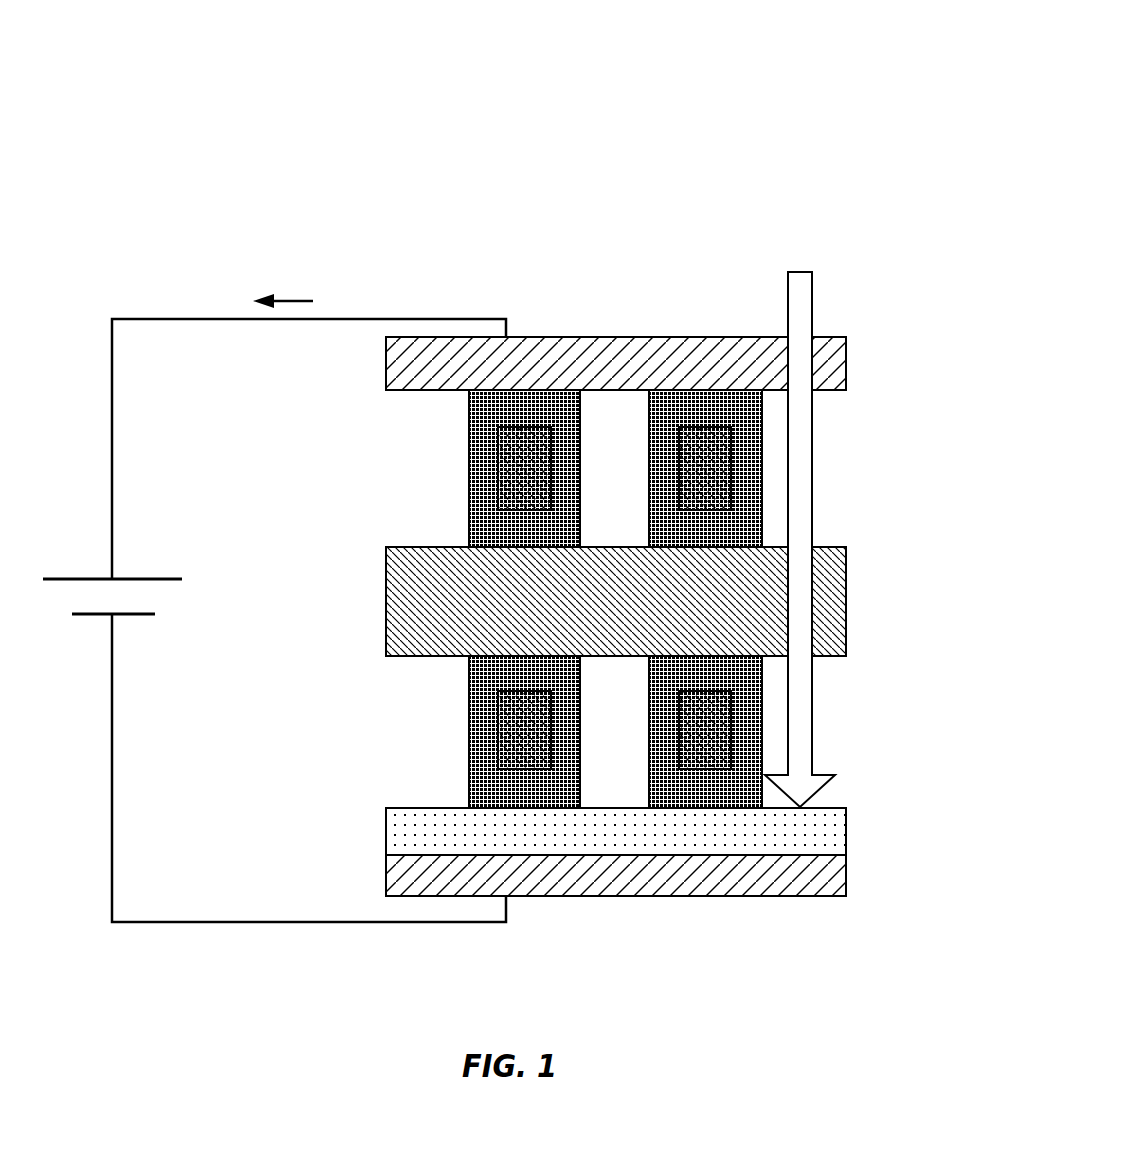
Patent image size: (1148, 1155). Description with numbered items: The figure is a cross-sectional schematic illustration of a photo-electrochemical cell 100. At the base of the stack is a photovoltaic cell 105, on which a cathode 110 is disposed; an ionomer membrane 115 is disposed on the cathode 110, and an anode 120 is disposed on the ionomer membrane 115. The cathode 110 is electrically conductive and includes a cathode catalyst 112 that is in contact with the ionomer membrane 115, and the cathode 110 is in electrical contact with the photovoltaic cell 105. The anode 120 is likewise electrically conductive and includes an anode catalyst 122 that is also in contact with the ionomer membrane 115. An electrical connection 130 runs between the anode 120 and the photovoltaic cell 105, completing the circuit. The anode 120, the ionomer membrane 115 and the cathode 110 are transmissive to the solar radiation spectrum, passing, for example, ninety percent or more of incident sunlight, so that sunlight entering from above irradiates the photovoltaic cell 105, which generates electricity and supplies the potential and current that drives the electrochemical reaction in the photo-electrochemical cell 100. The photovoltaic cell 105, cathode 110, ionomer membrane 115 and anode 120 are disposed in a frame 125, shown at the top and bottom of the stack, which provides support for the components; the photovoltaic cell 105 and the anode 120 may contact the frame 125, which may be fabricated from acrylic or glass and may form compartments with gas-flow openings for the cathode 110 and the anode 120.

The photo-electrochemical cell 100 is at (672, 462).
The photovoltaic cell 105 is at (826, 836).
The cathode 110 is at (715, 718).
The cathode catalyst 112 is at (760, 760).
The ionomer membrane 115 is at (832, 606).
The anode 120 is at (710, 453).
The anode catalyst 122 is at (745, 496).
The frame 125 is at (832, 367).
The electrical connection 130 is at (355, 319).